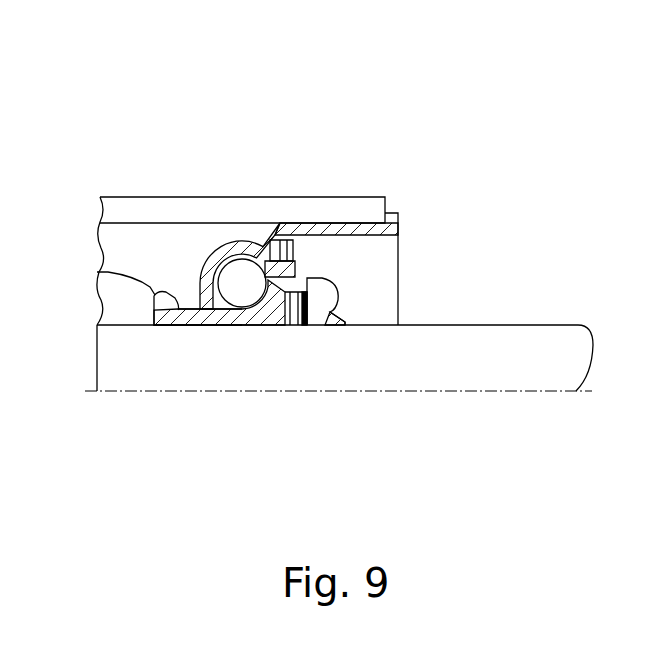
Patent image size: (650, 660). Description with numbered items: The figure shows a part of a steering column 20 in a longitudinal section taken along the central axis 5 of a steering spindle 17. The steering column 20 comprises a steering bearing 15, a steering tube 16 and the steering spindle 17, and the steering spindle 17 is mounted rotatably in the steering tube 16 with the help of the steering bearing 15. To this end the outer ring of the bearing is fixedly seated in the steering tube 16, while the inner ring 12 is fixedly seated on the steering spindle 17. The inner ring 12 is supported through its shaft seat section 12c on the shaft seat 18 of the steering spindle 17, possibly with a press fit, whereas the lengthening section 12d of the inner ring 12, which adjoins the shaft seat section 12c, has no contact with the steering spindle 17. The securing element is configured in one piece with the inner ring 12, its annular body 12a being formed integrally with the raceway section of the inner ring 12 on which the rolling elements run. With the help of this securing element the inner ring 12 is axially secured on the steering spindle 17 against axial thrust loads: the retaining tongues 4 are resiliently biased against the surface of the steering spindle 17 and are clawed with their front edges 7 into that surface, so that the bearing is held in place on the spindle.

The steering column 20 is at (470, 93).
The steering tube 16 is at (273, 205).
The steering bearing 15 is at (245, 277).
The inner ring 12 is at (257, 300).
The annular body 12a is at (313, 278).
The shaft seat section 12c is at (190, 327).
The lengthening section 12d is at (97, 272).
The retaining tongues 4 is at (330, 307).
The front edges 7 is at (323, 325).
The steering spindle 17 is at (120, 358).
The shaft seat 18 is at (245, 309).
The central axis 5 is at (550, 393).